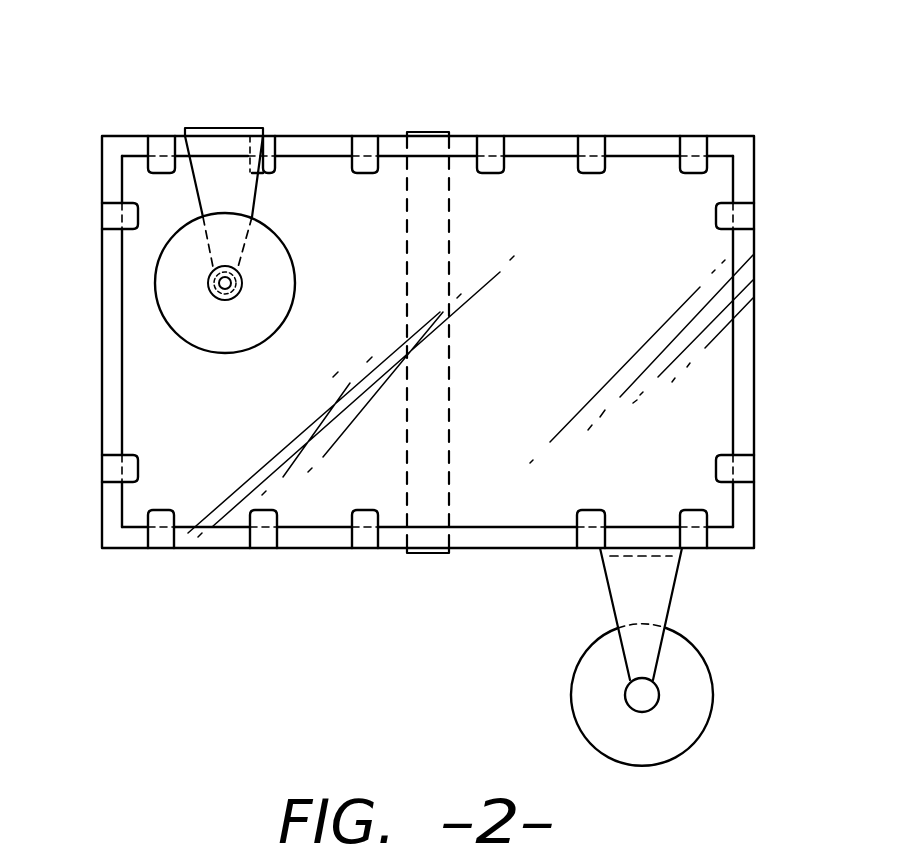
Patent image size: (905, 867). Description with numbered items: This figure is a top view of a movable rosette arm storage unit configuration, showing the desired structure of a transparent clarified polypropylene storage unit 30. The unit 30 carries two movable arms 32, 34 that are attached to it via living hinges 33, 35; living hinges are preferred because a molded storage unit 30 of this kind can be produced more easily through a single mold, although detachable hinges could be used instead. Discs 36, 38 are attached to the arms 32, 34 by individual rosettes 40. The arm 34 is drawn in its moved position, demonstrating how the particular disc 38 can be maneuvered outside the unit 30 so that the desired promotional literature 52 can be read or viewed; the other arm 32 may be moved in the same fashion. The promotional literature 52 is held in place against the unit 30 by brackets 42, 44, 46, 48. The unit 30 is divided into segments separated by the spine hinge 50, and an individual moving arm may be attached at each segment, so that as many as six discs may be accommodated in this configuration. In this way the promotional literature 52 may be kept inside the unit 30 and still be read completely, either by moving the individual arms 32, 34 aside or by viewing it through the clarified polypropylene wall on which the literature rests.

The transparent cPP storage unit 30 is at (616, 108).
The movable arm 32 is at (253, 200).
The living hinge 33 is at (213, 127).
The movable arm 34 is at (609, 585).
The living hinge 35 is at (681, 552).
The disc 36 is at (155, 283).
The disc 38 is at (571, 683).
The rosette 40 is at (212, 293).
The bracket 42 is at (112, 211).
The bracket 44 is at (112, 464).
The bracket 46 is at (742, 211).
The bracket 48 is at (742, 463).
The spine hinge 50 is at (449, 135).
The promotional literature 52 is at (308, 510).